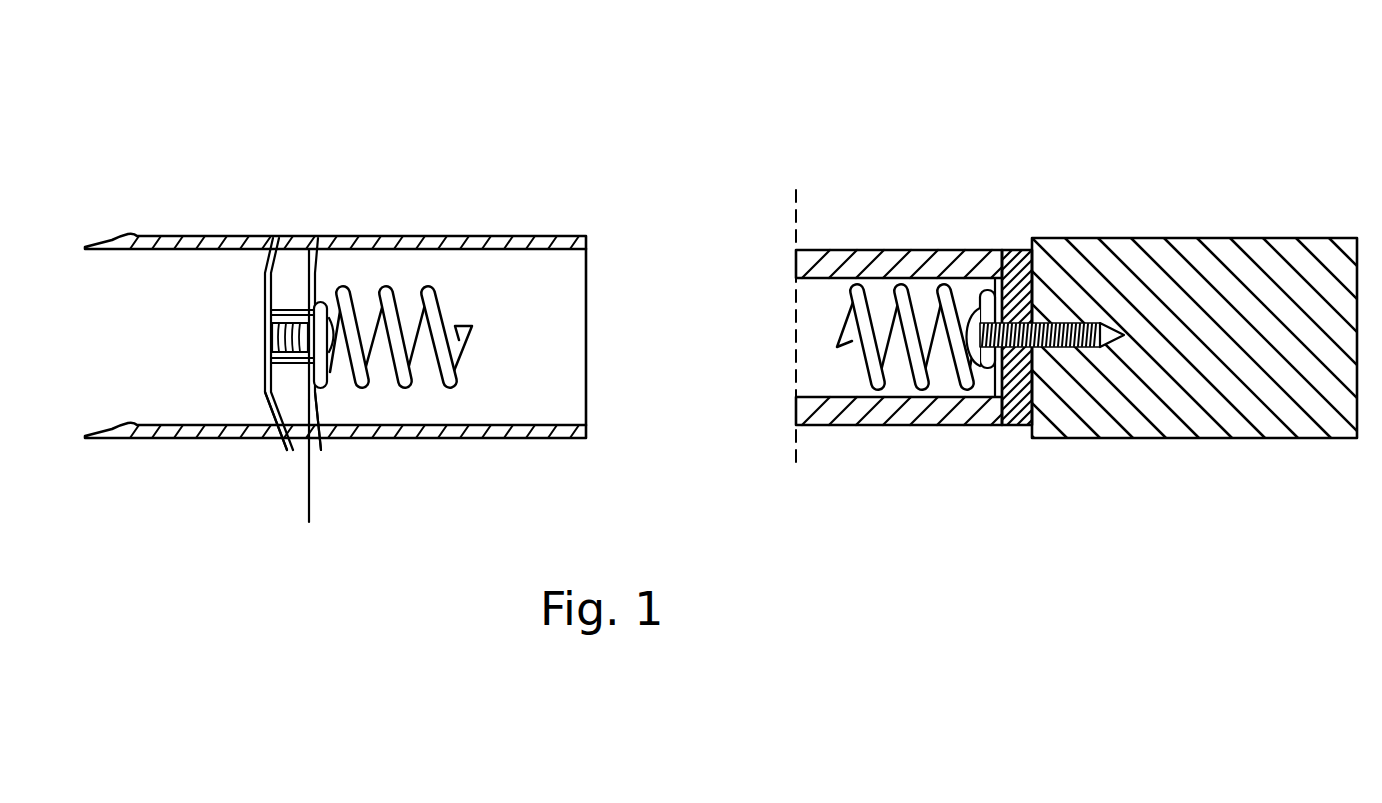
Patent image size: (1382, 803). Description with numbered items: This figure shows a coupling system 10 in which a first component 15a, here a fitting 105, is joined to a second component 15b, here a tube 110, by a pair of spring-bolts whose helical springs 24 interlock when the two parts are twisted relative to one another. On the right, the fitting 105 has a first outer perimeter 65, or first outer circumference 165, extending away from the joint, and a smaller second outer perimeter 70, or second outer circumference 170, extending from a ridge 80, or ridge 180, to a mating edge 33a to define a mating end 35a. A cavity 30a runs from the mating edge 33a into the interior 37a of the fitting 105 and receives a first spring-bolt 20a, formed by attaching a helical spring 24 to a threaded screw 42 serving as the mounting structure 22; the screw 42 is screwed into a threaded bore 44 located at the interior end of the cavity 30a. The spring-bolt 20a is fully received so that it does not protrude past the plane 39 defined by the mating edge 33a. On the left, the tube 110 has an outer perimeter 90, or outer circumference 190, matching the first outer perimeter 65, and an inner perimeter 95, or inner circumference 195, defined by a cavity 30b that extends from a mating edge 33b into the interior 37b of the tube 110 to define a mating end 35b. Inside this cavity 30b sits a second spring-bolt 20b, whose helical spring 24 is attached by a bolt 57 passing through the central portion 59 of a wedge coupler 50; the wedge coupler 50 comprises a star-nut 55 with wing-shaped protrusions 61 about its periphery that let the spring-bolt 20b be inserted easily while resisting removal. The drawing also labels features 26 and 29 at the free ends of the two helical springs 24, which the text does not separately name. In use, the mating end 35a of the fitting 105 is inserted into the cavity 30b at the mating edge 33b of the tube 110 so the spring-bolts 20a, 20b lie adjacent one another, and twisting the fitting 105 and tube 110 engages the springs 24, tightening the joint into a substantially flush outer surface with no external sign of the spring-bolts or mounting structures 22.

The coupling system 10 is at (436, 135).
The first component 15a is at (1079, 105).
The second component 15b is at (302, 183).
The first spring-bolt 20a is at (980, 400).
The second spring-bolt 20b is at (356, 408).
The mounting structure 22 is at (315, 243).
The helical spring 24 is at (367, 382).
The spring hook 26 is at (836, 350).
The spring hook 29 is at (470, 327).
The cavity of first component 30a is at (812, 308).
The cavity of second component 30b is at (567, 275).
The mating edge of first component 33a is at (793, 410).
The mating edge of second component 33b is at (586, 438).
The mating end of first component 35a is at (870, 448).
The mating end of second component 35b is at (498, 448).
The interior of first component 37a is at (1033, 437).
The interior of second component 37b is at (232, 378).
The plane defined by mating edge 39 is at (796, 475).
The threaded screw 42 is at (1040, 322).
The threaded bore 44 is at (1083, 349).
The wedge coupler 50 is at (288, 262).
The star-nut 55 is at (264, 312).
The bolt 57 is at (276, 337).
The central portion of wedge coupler 59 is at (264, 349).
The wing-shaped protrusions 61 is at (309, 400).
The first outer perimeter 65 is at (1070, 238).
The second outer perimeter 70 is at (932, 250).
The ridge 80 is at (1032, 240).
The outer perimeter of second component 90 is at (228, 438).
The inner perimeter of second component 95 is at (378, 250).
The fitting 105 is at (1245, 295).
The tube 110 is at (125, 343).
The first outer circumference 165 is at (1153, 440).
The second outer circumference 170 is at (898, 426).
The ridge of fitting 180 is at (1027, 432).
The outer circumference of tube 190 is at (262, 440).
The inner circumference of tube 195 is at (477, 250).